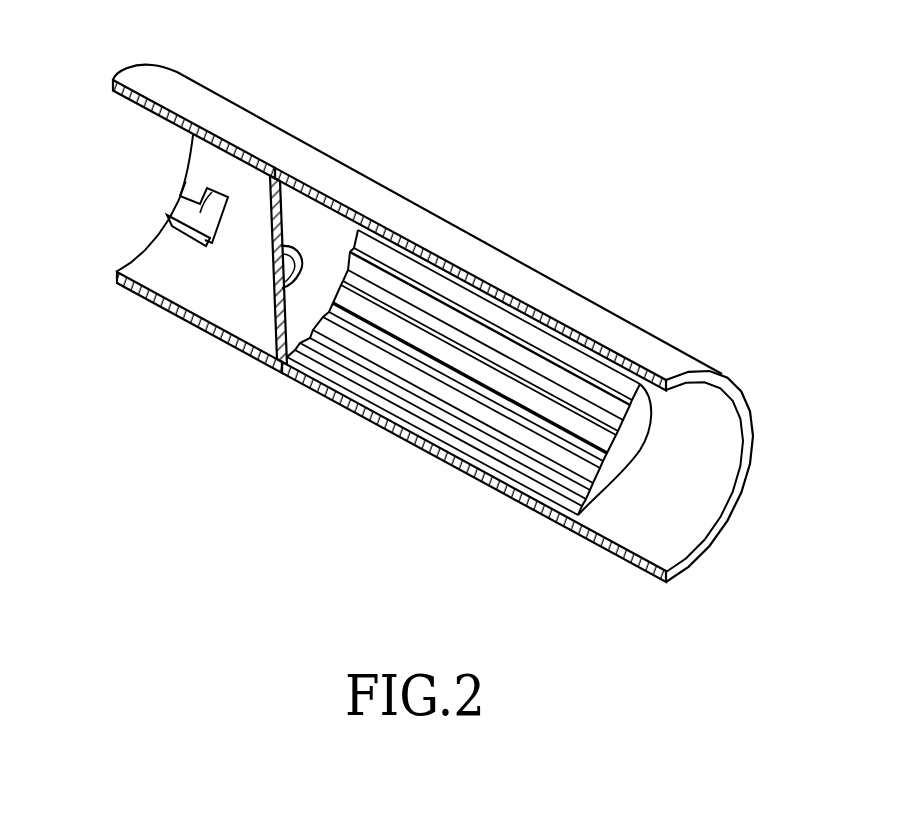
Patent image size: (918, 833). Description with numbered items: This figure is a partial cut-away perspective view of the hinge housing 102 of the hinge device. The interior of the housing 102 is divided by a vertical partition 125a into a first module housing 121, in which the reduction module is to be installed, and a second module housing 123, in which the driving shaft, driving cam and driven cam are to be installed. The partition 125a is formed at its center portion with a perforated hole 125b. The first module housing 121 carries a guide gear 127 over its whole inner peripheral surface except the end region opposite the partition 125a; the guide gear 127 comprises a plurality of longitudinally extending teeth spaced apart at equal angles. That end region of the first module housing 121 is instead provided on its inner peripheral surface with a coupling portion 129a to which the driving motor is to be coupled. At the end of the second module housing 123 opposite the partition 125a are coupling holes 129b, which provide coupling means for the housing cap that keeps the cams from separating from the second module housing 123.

The hinge housing 102 is at (569, 81).
The first module housing 121 is at (484, 220).
The second module housing 123 is at (235, 90).
The vertical partition 125a is at (268, 174).
The perforated hole 125b is at (277, 270).
The guide gear 127 is at (582, 420).
The coupling portion 129a is at (695, 428).
The coupling holes 129b is at (207, 220).